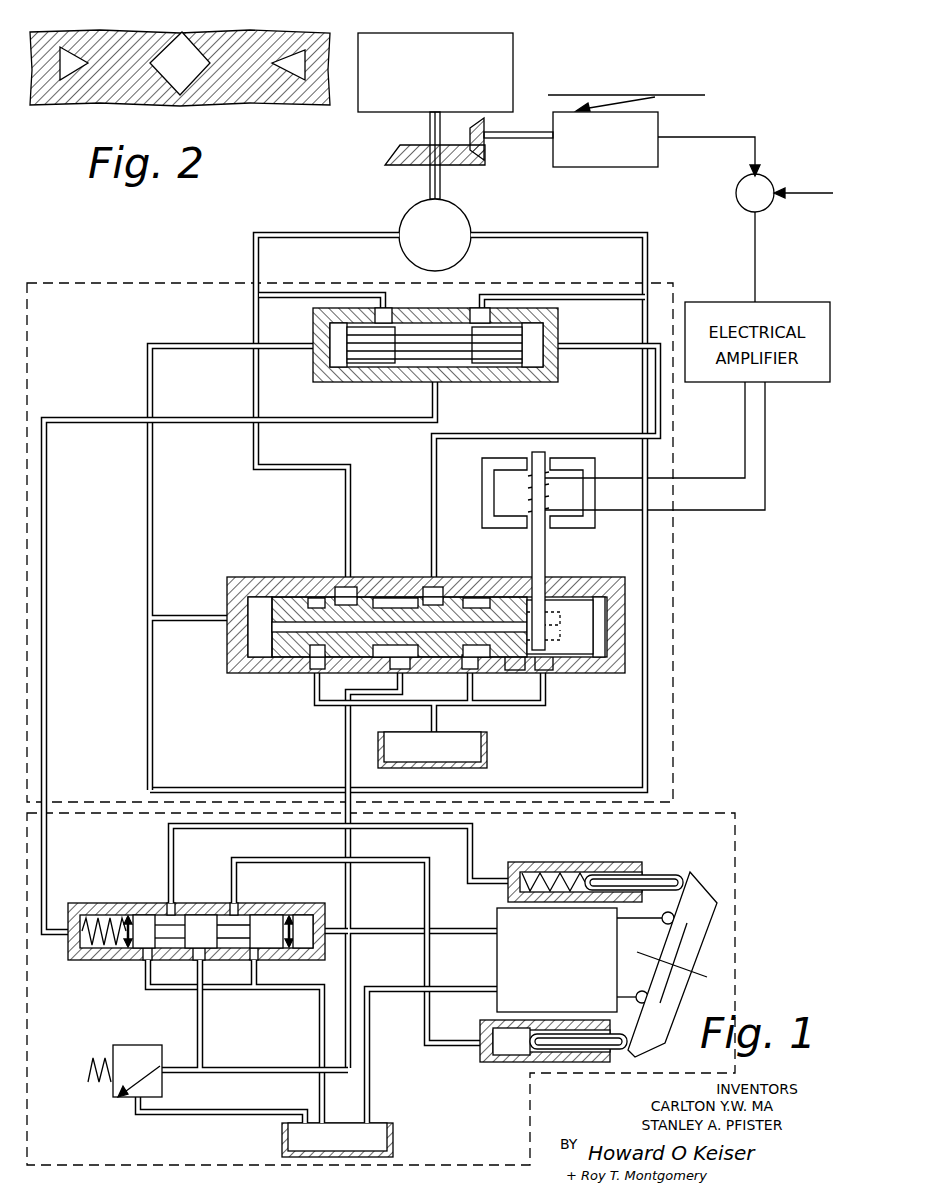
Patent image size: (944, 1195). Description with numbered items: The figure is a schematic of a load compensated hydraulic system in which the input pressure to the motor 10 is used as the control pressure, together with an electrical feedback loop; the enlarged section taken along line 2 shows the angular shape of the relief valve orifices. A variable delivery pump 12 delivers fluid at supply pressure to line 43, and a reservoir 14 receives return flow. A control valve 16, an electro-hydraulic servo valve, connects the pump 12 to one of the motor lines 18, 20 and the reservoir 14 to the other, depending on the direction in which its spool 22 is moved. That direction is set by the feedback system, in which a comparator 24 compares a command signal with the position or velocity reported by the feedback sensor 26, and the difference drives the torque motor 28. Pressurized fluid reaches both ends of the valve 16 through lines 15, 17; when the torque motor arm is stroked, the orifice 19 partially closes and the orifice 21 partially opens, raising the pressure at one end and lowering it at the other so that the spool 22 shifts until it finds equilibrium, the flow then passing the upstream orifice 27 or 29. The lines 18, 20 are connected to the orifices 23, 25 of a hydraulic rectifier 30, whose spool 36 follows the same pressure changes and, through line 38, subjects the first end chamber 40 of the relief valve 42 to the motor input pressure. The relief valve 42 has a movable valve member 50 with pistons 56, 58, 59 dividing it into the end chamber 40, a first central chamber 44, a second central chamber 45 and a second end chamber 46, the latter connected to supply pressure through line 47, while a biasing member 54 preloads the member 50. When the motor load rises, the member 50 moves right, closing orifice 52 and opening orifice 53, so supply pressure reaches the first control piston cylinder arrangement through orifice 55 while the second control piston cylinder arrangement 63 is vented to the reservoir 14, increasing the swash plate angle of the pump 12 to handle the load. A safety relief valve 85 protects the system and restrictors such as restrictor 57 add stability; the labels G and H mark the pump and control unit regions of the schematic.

In FIG. 1, the hydraulic motor 10 is at (468, 222).
In FIG. 1, the variable delivery pump 12 is at (497, 970).
In FIG. 1, the reservoir 14 is at (487, 752).
In FIG. 1, the line 15 is at (655, 412).
In FIG. 1, the control valve 16 is at (410, 562).
In FIG. 1, the line 17 is at (148, 468).
In FIG. 1, the motor line 18 is at (667, 265).
In FIG. 1, the orifice 19 is at (548, 664).
In FIG. 1, the motor line 20 is at (252, 252).
In FIG. 1, the orifice 21 is at (524, 668).
In FIG. 1, the control valve spool 22 is at (290, 600).
In FIG. 1, the orifice 23 is at (474, 318).
In FIG. 1, the comparator 24 is at (741, 205).
In FIG. 1, the orifice 25 is at (392, 318).
In FIG. 1, the feedback sensor 26 is at (626, 167).
In FIG. 1, the upstream orifice 27 is at (447, 592).
In FIG. 1, the torque motor 28 is at (482, 491).
In FIG. 1, the upstream orifice 29 is at (358, 592).
In FIG. 1, the hydraulic rectifier 30 is at (453, 358).
In FIG. 1, the rectifier spool 36 is at (514, 370).
In FIG. 1, the line 38 is at (48, 597).
In FIG. 1, the first end chamber 40 is at (110, 948).
In FIG. 1, the relief valve 42 is at (272, 974).
In FIG. 1, the line 43 is at (345, 770).
In FIG. 1, the first central chamber 44 is at (180, 905).
In FIG. 1, the second central chamber 45 is at (243, 915).
In FIG. 1, the second end chamber 46 is at (300, 955).
In FIG. 1, the line 47 is at (334, 926).
In FIG. 1, the movable valve member 50 is at (226, 965).
In FIG. 2, the orifice 52 is at (76, 48).
In FIG. 1, the orifice 52 is at (146, 964).
In FIG. 1, the orifice 53 is at (258, 958).
In FIG. 1, the biasing member 54 is at (75, 950).
In FIG. 2, the orifice 55 is at (182, 44).
In FIG. 1, the orifice 55 is at (207, 950).
In FIG. 1, the piston 56 is at (150, 915).
In FIG. 1, the restrictor 57 is at (147, 725).
In FIG. 1, the piston 58 is at (188, 945).
In FIG. 2, the piston 59 is at (290, 60).
In FIG. 1, the piston 59 is at (642, 716).
In FIG. 1, the second control piston cylinder arrangement 63 is at (505, 1062).
In FIG. 1, the safety relief valve 85 is at (112, 1090).
In FIG. 1, the section line 2 is at (209, 913).
In FIG. 1, the swash plate / gear sector G is at (738, 892).
In FIG. 1, the hydraulic control unit H is at (673, 660).